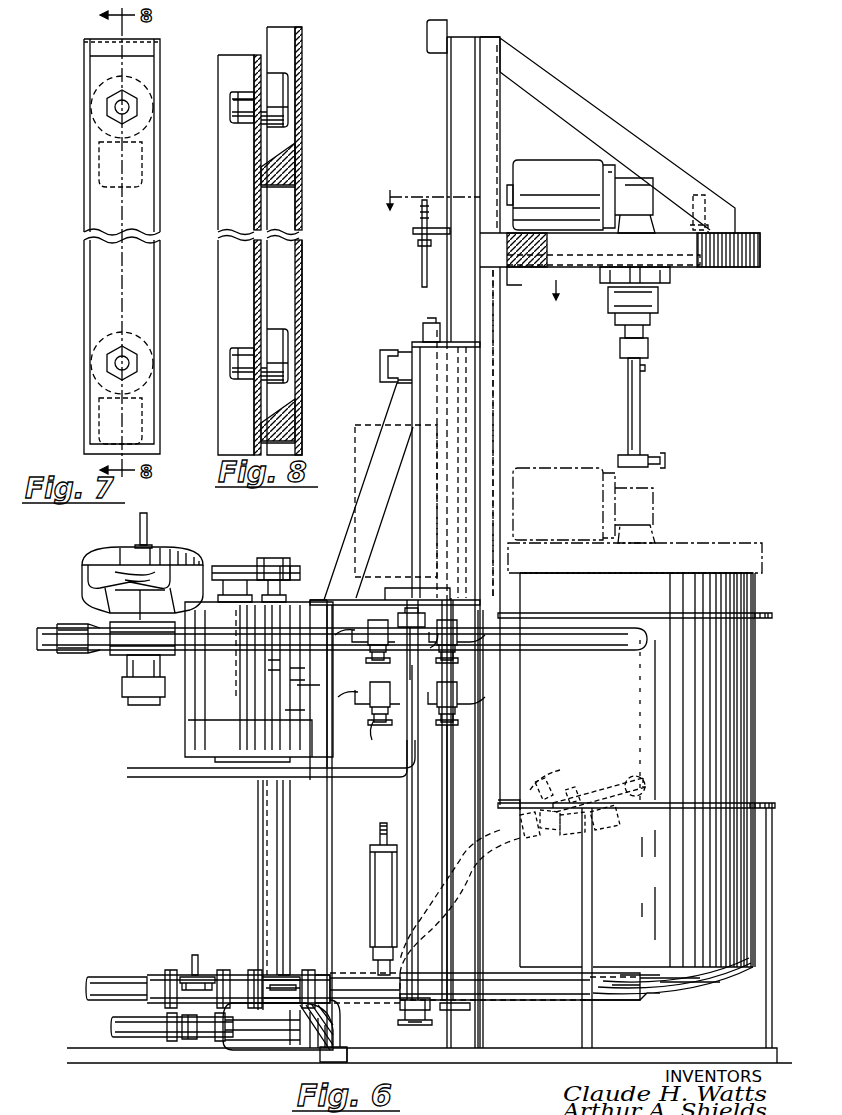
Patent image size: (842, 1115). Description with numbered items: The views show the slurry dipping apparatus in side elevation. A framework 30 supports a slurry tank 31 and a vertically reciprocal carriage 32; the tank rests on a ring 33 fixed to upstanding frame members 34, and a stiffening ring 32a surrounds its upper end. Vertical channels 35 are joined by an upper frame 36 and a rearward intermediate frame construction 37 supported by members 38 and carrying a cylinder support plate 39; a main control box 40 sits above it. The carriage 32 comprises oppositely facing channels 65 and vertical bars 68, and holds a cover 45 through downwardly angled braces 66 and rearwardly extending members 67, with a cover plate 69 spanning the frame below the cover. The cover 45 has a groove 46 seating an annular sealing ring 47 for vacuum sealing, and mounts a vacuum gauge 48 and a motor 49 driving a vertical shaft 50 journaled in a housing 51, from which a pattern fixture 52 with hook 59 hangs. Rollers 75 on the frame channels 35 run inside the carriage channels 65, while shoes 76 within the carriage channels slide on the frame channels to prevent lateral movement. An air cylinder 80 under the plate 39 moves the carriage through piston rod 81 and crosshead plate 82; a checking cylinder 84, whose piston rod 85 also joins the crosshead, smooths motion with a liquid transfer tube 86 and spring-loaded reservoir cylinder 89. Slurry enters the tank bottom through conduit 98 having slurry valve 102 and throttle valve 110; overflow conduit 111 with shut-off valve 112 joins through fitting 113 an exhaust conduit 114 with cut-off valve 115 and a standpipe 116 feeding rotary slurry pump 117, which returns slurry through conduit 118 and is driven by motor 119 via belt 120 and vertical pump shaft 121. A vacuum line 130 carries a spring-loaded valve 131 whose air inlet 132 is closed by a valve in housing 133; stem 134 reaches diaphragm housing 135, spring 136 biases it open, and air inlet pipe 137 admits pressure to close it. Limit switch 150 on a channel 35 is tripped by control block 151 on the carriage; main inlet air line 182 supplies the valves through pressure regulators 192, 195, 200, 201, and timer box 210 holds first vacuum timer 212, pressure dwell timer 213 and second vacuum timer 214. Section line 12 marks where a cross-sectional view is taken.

In FIG. 6, the framework 30 is at (500, 1066).
In FIG. 6, the slurry tank 31 is at (742, 715).
In FIG. 8, the carriage 32 is at (302, 36).
In FIG. 6, the carriage 32 is at (617, 135).
In FIG. 6, the stiffening ring 32a is at (762, 613).
In FIG. 6, the ring 33 is at (763, 803).
In FIG. 6, the upstanding frame members 34 is at (768, 912).
In FIG. 7, the vertical channels 35 is at (92, 209).
In FIG. 8, the vertical channels 35 is at (232, 58).
In FIG. 6, the vertical channels 35 is at (498, 778).
In FIG. 6, the upper frame 36 is at (390, 348).
In FIG. 6, the intermediate frame construction 37 is at (312, 600).
In FIG. 6, the members 38 is at (327, 830).
In FIG. 6, the cylinder support plate 39 is at (392, 588).
In FIG. 6, the main control box 40 is at (362, 425).
In FIG. 6, the cover 45 is at (760, 242).
In FIG. 6, the groove 46 is at (700, 272).
In FIG. 6, the annular sealing ring 47 is at (522, 270).
In FIG. 6, the vacuum gauge 48 is at (706, 200).
In FIG. 6, the motor 49 is at (558, 170).
In FIG. 6, the vertical shaft 50 is at (650, 352).
In FIG. 6, the housing 51 is at (660, 300).
In FIG. 6, the pattern set-up clamp or fixture 52 is at (648, 402).
In FIG. 6, the hook 59 is at (648, 368).
In FIG. 7, the carriage channels 65 is at (84, 44).
In FIG. 8, the carriage channels 65 is at (302, 222).
In FIG. 6, the carriage channels 65 is at (447, 122).
In FIG. 6, the downwardly angled braces 66 is at (585, 103).
In FIG. 6, the rearwardly extending members 67 is at (537, 218).
In FIG. 6, the vertical bars 68 is at (500, 135).
In FIG. 6, the cover plate 69 is at (500, 325).
In FIG. 7, the rollers 75 is at (92, 86).
In FIG. 8, the rollers 75 is at (280, 82).
In FIG. 7, the shoes 76 is at (114, 190).
In FIG. 8, the shoes 76 is at (298, 160).
In FIG. 6, the air cylinder 80 is at (487, 764).
In FIG. 6, the piston rod 81 is at (440, 304).
In FIG. 6, the carriage crosshead plate 82 is at (413, 236).
In FIG. 6, the piston rod 85 is at (420, 272).
In FIG. 6, the checking cylinder 84 is at (420, 812).
In FIG. 6, the liquid transfer tube 86 is at (440, 800).
In FIG. 6, the spring-loaded reservoir cylinder 89 is at (372, 880).
In FIG. 6, the conduit 98 is at (100, 977).
In FIG. 6, the slurry valve 102 is at (262, 970).
In FIG. 6, the throttle valve 110 is at (178, 970).
In FIG. 6, the overflow conduit 111 is at (460, 902).
In FIG. 6, the slurry shut-off valve 112 is at (567, 782).
In FIG. 6, the fitting 113 is at (318, 970).
In FIG. 6, the exhaust conduit 114 is at (340, 1050).
In FIG. 6, the slurry cut-off valve 115 is at (398, 1022).
In FIG. 6, the standpipe 116 is at (258, 846).
In FIG. 6, the rotary slurry pump 117 is at (264, 1058).
In FIG. 6, the conduit 118 is at (125, 1040).
In FIG. 6, the motor 119 is at (192, 725).
In FIG. 6, the belt 120 is at (248, 566).
In FIG. 6, the vertical pump shaft 121 is at (274, 560).
In FIG. 6, the vacuum line 130 is at (85, 652).
In FIG. 6, the spring-loaded valve 131 is at (112, 561).
In FIG. 6, the air inlet 132 is at (130, 710).
In FIG. 6, the valve housing 133 is at (117, 665).
In FIG. 6, the stem 134 is at (95, 603).
In FIG. 6, the diaphragm housing 135 is at (175, 548).
In FIG. 6, the spring 136 is at (88, 577).
In FIG. 6, the air inlet pipe 137 is at (148, 528).
In FIG. 6, the limit switch 150 is at (423, 330).
In FIG. 6, the control block 151 is at (425, 36).
In FIG. 6, the main inlet air line 182 is at (145, 790).
In FIG. 6, the pressure regulator 192 is at (460, 715).
In FIG. 6, the pressure regulator valve 195 is at (372, 728).
In FIG. 6, the pressure regulator 200 is at (460, 655).
In FIG. 6, the pressure regulator 201 is at (357, 632).
In FIG. 6, the timer box 210 is at (480, 345).
In FIG. 6, the first vacuum timer 212 is at (480, 362).
In FIG. 6, the pressure dwell timer 213 is at (480, 432).
In FIG. 6, the second vacuum timer 214 is at (480, 478).
In FIG. 6, the section line 12 is at (467, 245).